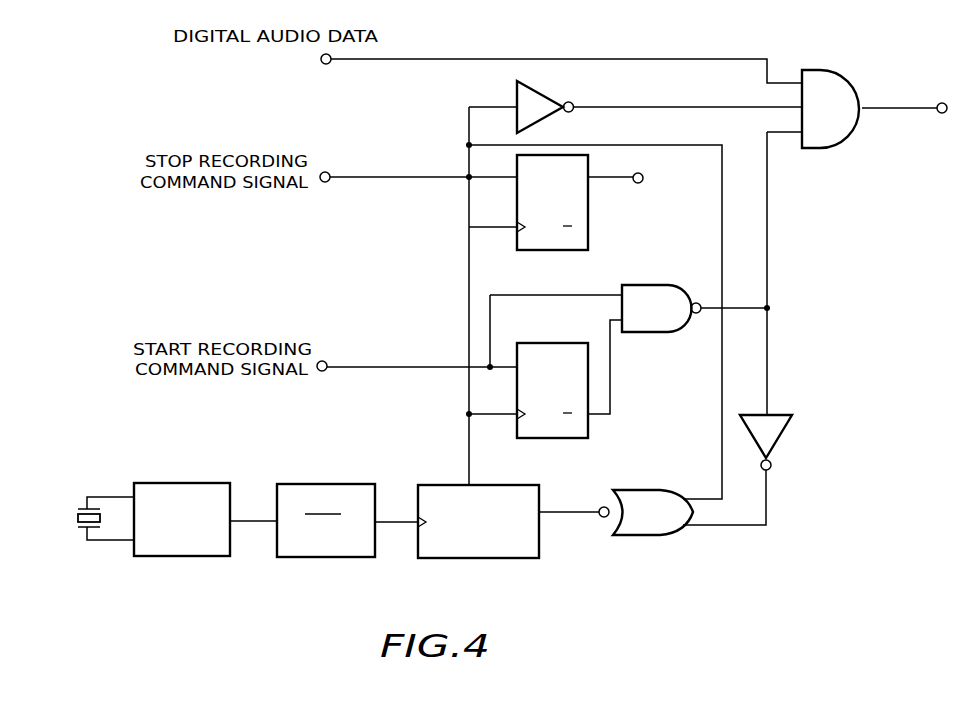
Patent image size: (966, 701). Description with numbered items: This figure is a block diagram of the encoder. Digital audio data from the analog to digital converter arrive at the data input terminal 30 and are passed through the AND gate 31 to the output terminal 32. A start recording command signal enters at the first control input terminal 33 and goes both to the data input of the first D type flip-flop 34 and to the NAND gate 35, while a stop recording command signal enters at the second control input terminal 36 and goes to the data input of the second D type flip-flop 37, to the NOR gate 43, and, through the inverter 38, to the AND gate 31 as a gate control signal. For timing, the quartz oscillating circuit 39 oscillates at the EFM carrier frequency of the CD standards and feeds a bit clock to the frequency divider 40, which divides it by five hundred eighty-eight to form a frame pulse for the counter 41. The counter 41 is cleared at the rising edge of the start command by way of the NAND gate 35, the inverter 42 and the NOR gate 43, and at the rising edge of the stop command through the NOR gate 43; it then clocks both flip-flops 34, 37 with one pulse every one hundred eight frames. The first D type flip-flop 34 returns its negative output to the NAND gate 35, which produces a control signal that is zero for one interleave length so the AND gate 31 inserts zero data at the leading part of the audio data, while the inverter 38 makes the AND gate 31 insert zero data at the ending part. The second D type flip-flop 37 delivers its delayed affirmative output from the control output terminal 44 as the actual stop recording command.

The data input terminal 30 is at (328, 64).
The AND gate 31 is at (843, 71).
The output terminal 32 is at (942, 102).
The first control input terminal 33 is at (322, 371).
The first D type flip-flop 34 is at (560, 438).
The NAND gate 35 is at (655, 332).
The second control input terminal 36 is at (325, 182).
The second D type flip-flop 37 is at (555, 250).
The inverter 38 is at (558, 115).
The quartz oscillating circuit 39 is at (185, 556).
The frequency divider 40 is at (325, 557).
The counter 41 is at (463, 558).
The inverter 42 is at (780, 442).
The NOR gate 43 is at (645, 537).
The control output terminal 44 is at (640, 184).